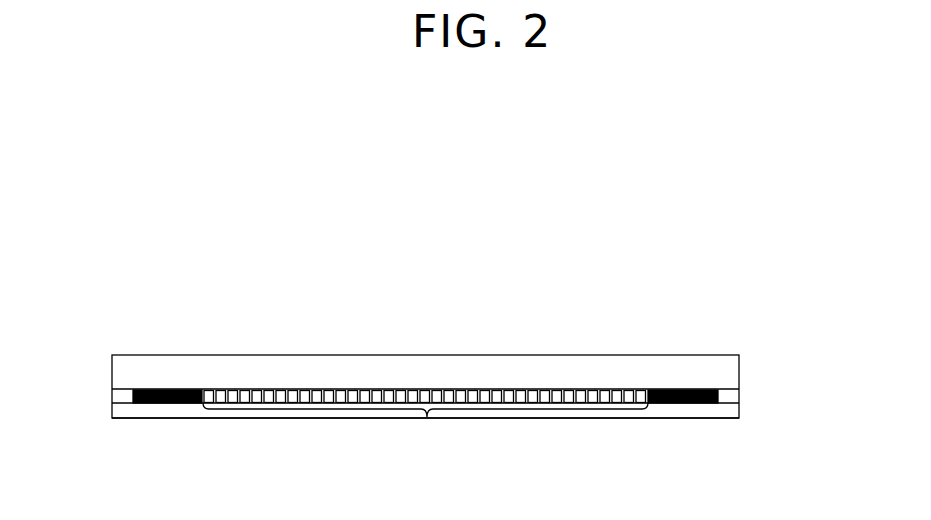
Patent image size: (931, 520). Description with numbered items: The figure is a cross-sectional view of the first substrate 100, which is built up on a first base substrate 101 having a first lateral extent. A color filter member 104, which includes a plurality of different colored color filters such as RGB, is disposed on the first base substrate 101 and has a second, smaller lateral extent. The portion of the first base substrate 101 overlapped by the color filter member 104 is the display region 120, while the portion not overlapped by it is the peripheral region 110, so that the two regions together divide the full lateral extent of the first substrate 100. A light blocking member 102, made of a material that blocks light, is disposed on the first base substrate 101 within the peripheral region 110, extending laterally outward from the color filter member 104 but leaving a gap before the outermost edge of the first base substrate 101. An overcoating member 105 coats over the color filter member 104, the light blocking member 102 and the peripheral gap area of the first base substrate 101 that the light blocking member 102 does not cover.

The first substrate 100 is at (526, 284).
The first base substrate 101 is at (739, 370).
The light blocking member 102 is at (739, 395).
The color filter member 104 is at (427, 419).
The overcoating member 105 is at (739, 408).
The peripheral region 110 is at (202, 347).
The display region 120 is at (648, 347).